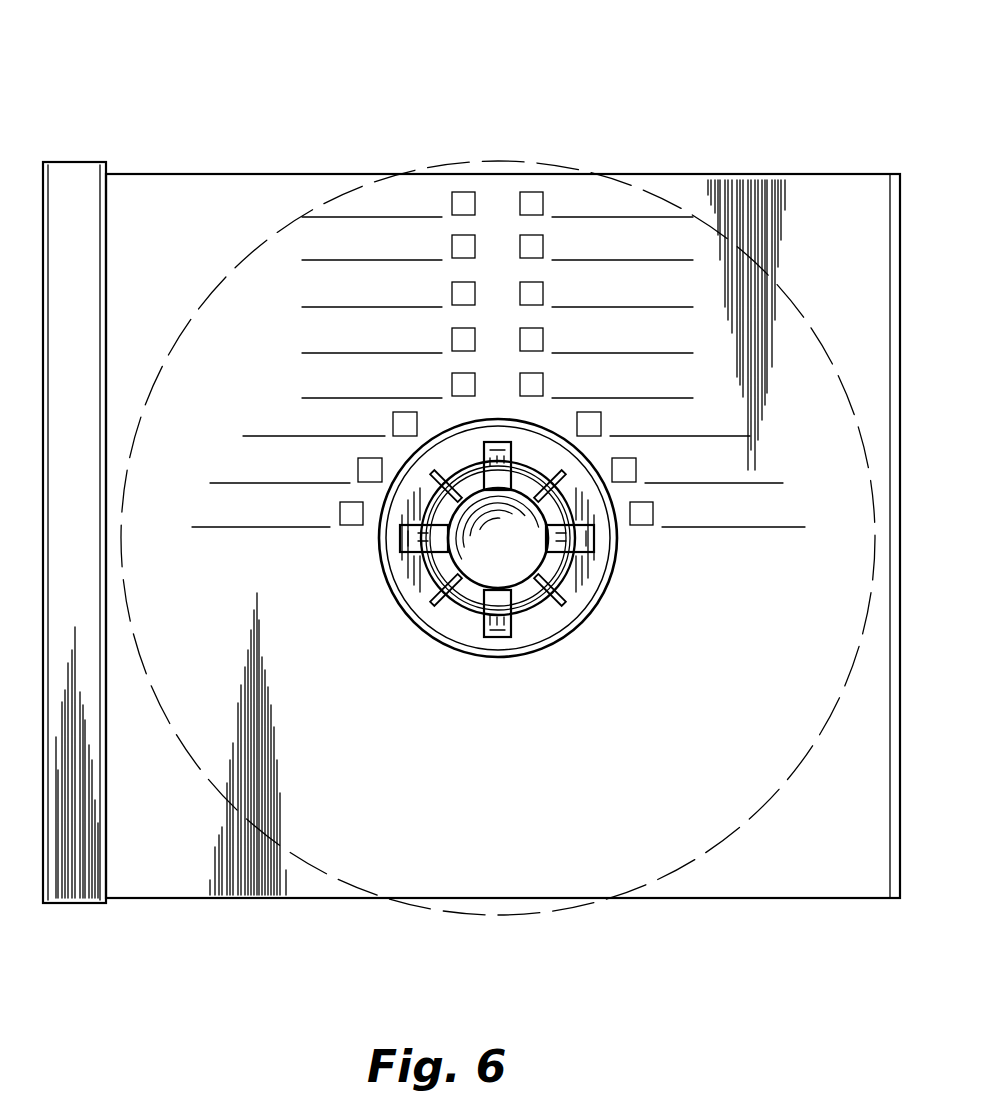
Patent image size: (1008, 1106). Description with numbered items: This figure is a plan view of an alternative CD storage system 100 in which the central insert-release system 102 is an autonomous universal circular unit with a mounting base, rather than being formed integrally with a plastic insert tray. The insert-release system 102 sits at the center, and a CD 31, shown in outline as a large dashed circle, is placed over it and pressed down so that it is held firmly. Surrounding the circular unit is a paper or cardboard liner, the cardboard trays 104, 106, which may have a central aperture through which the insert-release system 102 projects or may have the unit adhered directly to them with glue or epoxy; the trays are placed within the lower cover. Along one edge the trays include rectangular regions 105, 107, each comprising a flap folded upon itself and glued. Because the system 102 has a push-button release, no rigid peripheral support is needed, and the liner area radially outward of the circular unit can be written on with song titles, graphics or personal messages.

The CD storage system 100 is at (255, 62).
The CD 31 is at (690, 862).
The central insert-release system 102 is at (412, 643).
The cardboard tray 104 is at (496, 926).
The cardboard tray 106 is at (155, 875).
The rectangular region 105 is at (130, 512).
The rectangular region 107 is at (80, 163).